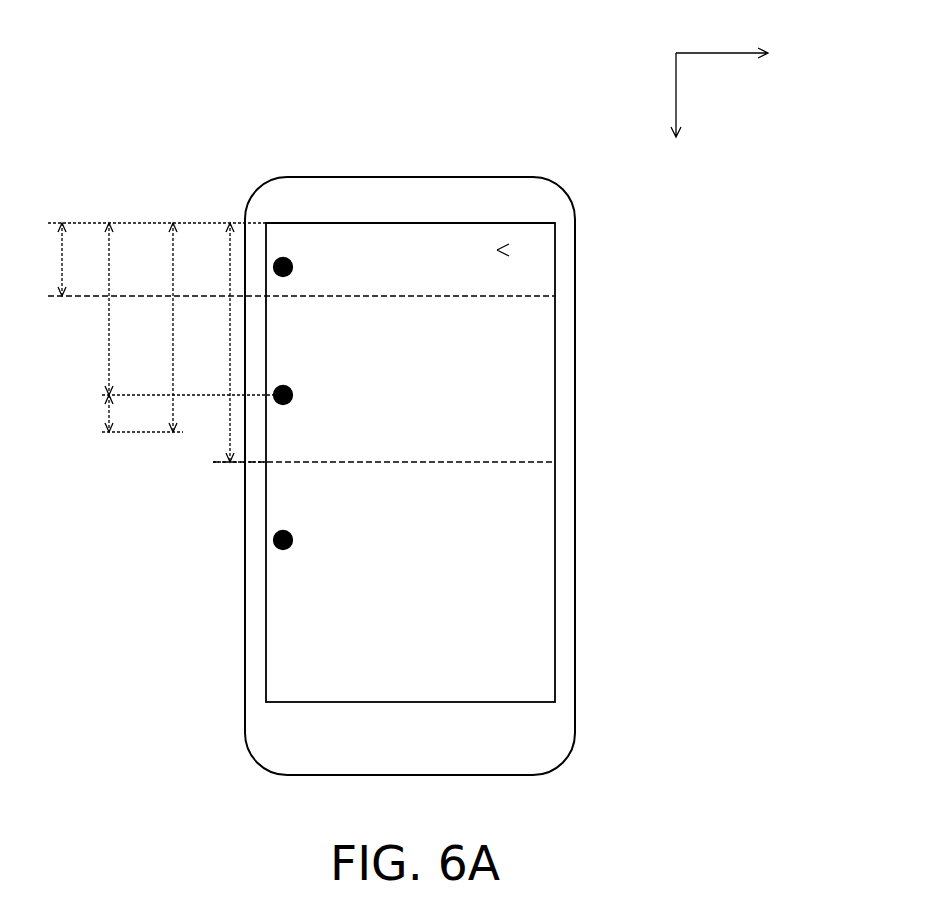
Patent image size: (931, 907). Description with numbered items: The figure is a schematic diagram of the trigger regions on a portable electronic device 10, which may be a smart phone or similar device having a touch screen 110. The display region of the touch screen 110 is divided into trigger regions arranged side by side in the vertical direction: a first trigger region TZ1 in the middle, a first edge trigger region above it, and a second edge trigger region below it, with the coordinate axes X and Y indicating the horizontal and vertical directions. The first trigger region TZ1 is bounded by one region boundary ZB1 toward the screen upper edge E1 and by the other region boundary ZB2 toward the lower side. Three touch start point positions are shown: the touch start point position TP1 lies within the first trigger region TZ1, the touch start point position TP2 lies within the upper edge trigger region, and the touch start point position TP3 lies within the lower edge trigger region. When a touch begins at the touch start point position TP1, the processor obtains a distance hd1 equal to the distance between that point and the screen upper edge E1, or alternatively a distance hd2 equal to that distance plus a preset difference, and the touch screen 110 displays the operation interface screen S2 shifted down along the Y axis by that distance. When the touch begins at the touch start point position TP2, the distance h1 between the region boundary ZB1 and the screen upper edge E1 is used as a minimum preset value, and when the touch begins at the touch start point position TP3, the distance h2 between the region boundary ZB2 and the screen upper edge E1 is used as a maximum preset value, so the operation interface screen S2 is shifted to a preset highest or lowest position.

The portable electronic device 10 is at (382, 176).
The touch screen 110 is at (470, 222).
The screen upper edge E1 is at (314, 222).
The touch start point position TP1 is at (291, 389).
The touch start point position TP2 is at (291, 262).
The touch start point position TP3 is at (292, 534).
The operation interface screen S2 is at (498, 250).
The trigger region TZ1 is at (537, 390).
The region boundary ZB1 is at (522, 297).
The region boundary ZB2 is at (522, 463).
The distance h1 is at (51, 259).
The distance h2 is at (217, 342).
The distance hd1 is at (93, 309).
The distance hd2 is at (153, 327).
The X axis X is at (731, 54).
The Y axis Y is at (676, 112).